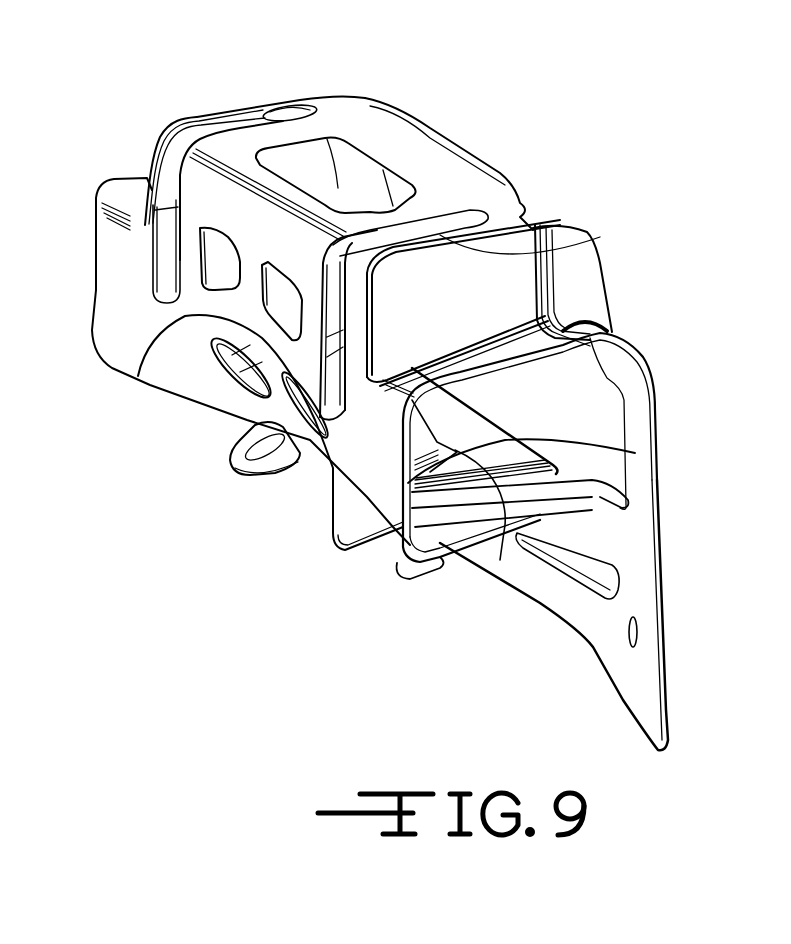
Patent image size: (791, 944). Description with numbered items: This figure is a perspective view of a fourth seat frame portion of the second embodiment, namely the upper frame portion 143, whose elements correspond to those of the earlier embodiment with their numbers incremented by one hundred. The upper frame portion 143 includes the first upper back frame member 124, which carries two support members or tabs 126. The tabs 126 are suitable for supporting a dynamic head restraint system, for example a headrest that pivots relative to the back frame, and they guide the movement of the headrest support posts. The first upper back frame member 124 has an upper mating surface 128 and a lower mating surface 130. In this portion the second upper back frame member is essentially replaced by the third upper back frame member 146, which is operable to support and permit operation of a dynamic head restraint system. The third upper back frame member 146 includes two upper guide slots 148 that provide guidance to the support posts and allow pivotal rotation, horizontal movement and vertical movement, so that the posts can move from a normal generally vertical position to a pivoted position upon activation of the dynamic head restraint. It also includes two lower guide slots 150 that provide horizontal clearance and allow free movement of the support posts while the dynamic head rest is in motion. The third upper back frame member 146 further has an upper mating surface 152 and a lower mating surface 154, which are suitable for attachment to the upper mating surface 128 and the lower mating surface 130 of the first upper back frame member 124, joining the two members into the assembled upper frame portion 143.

The first upper back frame member 124 is at (660, 572).
The tabs 126 is at (240, 477).
The upper mating surface 128 is at (480, 160).
The lower mating surface 130 is at (635, 453).
The upper frame portion 143 is at (530, 103).
The third upper back frame member 146 is at (557, 250).
The upper guide slots 148 is at (200, 120).
The lower guide slots 150 is at (257, 385).
The upper mating surface 152 is at (370, 130).
The lower mating surface 154 is at (415, 452).